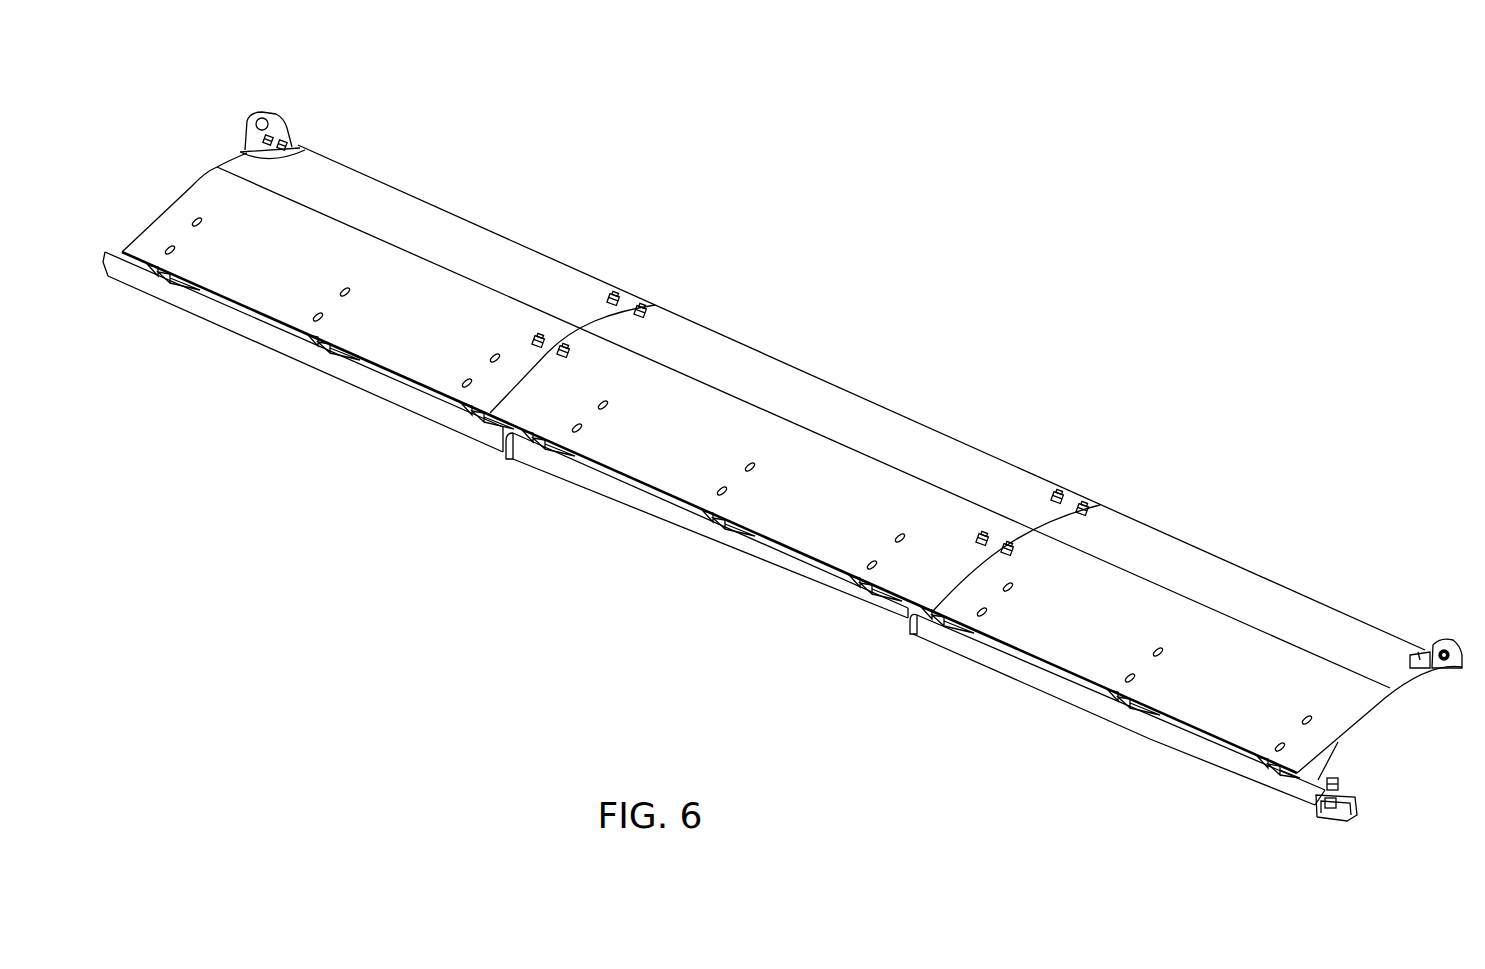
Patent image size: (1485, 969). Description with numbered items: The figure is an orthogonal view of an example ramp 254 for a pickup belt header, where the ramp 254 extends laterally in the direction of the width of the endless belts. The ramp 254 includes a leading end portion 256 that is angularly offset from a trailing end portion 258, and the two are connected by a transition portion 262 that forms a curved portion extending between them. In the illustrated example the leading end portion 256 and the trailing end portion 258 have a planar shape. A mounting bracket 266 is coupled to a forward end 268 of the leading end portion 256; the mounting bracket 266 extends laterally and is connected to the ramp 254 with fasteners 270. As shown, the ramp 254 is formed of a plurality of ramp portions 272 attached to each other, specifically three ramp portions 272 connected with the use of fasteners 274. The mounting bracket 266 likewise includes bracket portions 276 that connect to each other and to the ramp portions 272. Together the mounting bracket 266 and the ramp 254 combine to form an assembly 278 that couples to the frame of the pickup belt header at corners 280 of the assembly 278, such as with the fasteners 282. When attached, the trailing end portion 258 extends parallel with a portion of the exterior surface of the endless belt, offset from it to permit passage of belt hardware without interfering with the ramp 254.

The ramp 254 is at (957, 437).
The leading end portion 256 is at (833, 480).
The trailing end portion 258 is at (763, 377).
The transition portion 262 is at (867, 435).
The mounting bracket 266 is at (1180, 745).
The forward end 268 is at (1063, 610).
The fasteners 270 is at (197, 230).
The ramp portions 272 is at (443, 210).
The fasteners 274 is at (538, 335).
The bracket portions 276 is at (347, 383).
The assembly 278 is at (955, 185).
The corners 280 is at (288, 113).
The fasteners 282 is at (1450, 662).